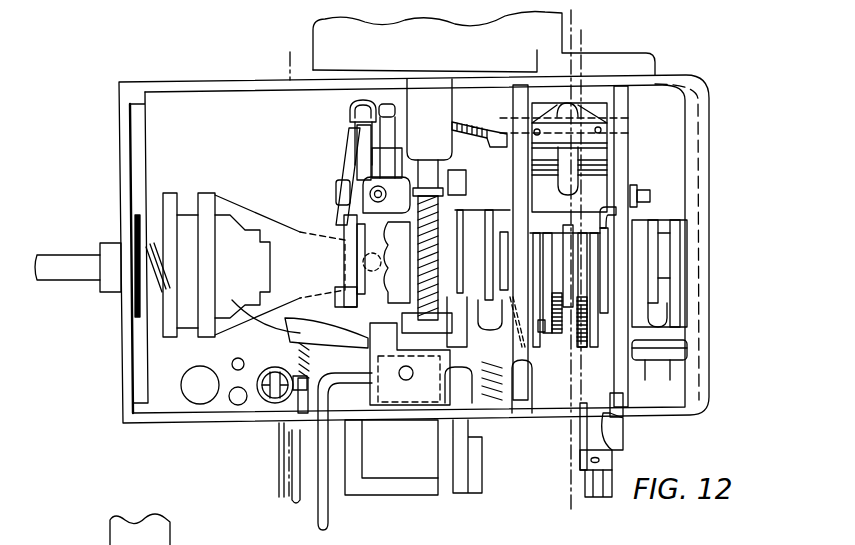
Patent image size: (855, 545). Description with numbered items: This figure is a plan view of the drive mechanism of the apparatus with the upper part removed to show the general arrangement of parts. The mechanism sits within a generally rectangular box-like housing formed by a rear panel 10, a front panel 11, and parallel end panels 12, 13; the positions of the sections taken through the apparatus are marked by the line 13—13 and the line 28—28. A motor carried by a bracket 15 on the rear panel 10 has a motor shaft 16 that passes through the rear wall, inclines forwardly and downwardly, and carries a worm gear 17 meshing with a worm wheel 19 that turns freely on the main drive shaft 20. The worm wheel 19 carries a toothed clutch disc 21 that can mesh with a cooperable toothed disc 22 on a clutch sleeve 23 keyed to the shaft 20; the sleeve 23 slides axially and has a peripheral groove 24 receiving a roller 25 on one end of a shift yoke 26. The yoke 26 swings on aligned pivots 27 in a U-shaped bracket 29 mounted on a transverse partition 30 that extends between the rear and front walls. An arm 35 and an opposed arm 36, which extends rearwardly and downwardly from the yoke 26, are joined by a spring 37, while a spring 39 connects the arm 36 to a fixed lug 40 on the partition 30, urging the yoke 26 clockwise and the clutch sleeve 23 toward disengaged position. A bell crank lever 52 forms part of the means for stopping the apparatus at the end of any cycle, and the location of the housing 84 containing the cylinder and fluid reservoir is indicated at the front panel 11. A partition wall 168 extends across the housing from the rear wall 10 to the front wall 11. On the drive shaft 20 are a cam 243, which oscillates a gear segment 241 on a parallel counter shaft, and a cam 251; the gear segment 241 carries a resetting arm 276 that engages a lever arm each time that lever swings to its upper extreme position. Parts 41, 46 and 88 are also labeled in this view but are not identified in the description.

The rear panel 10 is at (222, 80).
The front panel 11 is at (206, 420).
The end panel 12 is at (128, 353).
The end panel 13 is at (572, 22).
The bracket 15 is at (581, 43).
The motor shaft 16 is at (431, 100).
The worm gear 17 is at (429, 168).
The worm wheel 19 is at (446, 333).
The shaft 20 is at (673, 244).
The toothed clutch disc 21 is at (420, 258).
The toothed disc 22 is at (384, 259).
The clutch sleeve 23 is at (346, 248).
The peripheral groove 24 is at (346, 214).
The roller 25 is at (345, 263).
The shift yoke 26 is at (372, 165).
The aligned pivots 27 is at (338, 186).
The section line 28— 28 is at (312, 50).
The U-shaped bracket 29 is at (453, 178).
The transverse partition 30 is at (516, 104).
The arm 35 is at (352, 133).
The opposed arm 36 is at (379, 110).
The spring 37 is at (350, 113).
The spring 39 is at (452, 138).
The fixed lug 40 is at (514, 136).
The lever 41 is at (292, 326).
The rod 46 is at (336, 509).
The bell crank lever 52 is at (279, 468).
The housing 84 is at (190, 406).
The pivot 88 is at (386, 195).
The partition wall 168 is at (640, 400).
The gear segment 241 is at (588, 355).
The cam 243 is at (593, 258).
The cam 251 is at (490, 224).
The resetting arm 276 is at (558, 373).